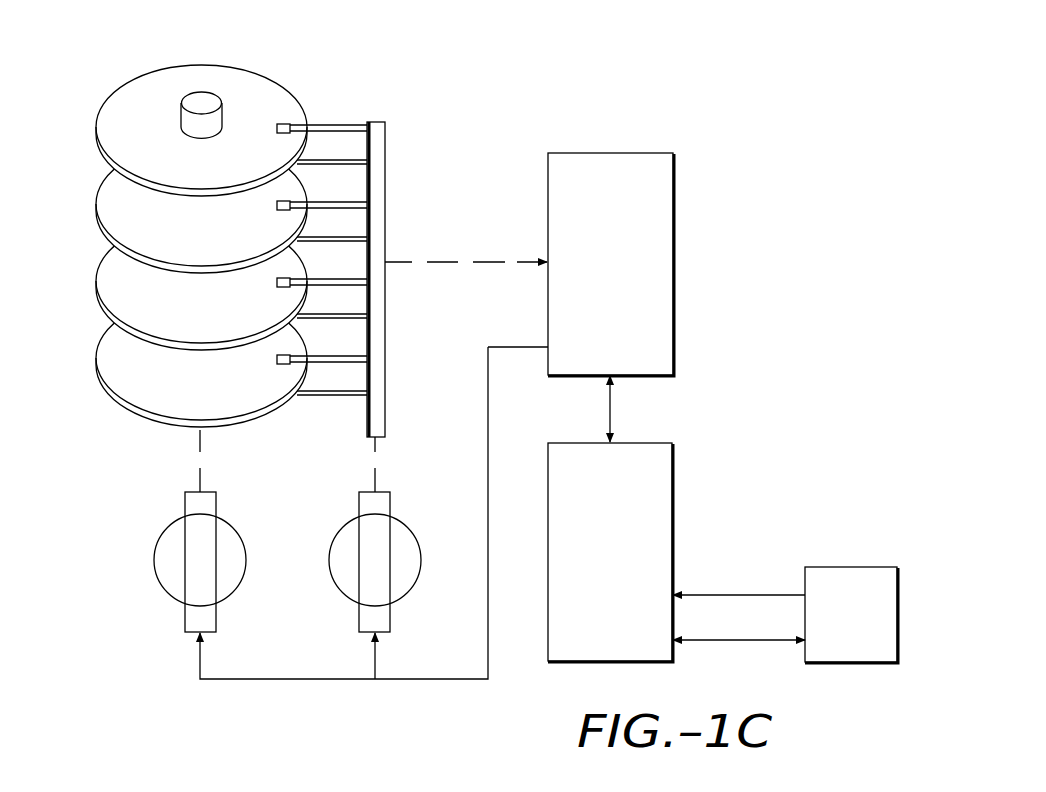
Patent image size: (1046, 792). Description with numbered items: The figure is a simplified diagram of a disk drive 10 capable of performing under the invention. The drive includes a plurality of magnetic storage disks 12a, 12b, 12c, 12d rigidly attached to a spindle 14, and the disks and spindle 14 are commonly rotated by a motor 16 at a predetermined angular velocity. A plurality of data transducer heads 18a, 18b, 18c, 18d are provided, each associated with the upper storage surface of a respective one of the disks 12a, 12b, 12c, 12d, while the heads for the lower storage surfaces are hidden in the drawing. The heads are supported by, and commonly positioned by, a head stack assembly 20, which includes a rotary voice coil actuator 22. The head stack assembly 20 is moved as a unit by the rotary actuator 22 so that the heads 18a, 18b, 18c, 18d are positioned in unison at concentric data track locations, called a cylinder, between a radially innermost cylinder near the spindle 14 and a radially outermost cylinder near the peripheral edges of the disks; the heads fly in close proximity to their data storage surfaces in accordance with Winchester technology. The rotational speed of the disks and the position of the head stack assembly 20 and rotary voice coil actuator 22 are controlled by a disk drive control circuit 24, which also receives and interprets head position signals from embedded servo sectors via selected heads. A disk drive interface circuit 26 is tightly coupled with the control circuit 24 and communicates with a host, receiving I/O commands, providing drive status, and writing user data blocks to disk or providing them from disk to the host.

The disk drive 10 is at (460, 368).
The magnetic storage disk 12a is at (96, 127).
The magnetic storage disk 12b is at (96, 204).
The magnetic storage disk 12c is at (96, 281).
The magnetic storage disk 12d is at (96, 358).
The spindle 14 is at (212, 100).
The motor 16 is at (253, 518).
The data transducer head 18a is at (286, 123).
The data transducer head 18b is at (286, 200).
The data transducer head 18c is at (286, 277).
The data transducer head 18d is at (286, 354).
The head stack assembly 20 is at (448, 191).
The rotary voice coil actuator 22 is at (405, 524).
The disk drive control circuit 24 is at (674, 189).
The disk drive interface circuit 26 is at (673, 478).